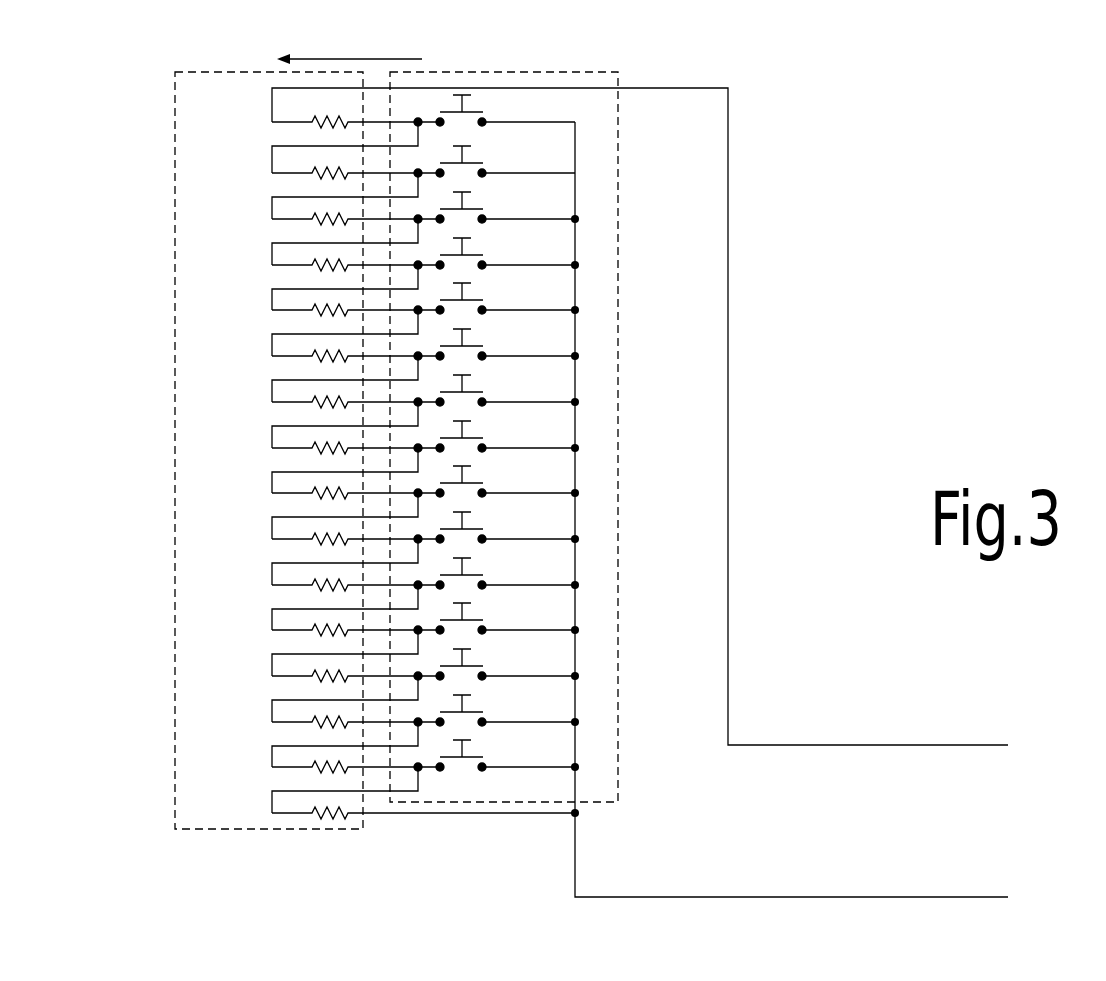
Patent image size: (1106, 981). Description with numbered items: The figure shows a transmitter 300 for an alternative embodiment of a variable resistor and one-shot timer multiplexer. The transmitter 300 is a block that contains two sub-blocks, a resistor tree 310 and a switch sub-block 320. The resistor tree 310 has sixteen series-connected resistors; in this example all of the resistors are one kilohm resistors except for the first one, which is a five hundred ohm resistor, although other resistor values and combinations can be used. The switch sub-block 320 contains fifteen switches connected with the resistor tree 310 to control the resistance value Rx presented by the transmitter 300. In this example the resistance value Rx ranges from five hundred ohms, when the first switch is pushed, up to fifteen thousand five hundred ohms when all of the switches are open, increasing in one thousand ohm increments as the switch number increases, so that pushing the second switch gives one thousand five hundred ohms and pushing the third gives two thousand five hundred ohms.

The transmitter 300 is at (768, 590).
The resistor tree 310 is at (193, 187).
The switch sub-block 320 is at (603, 202).